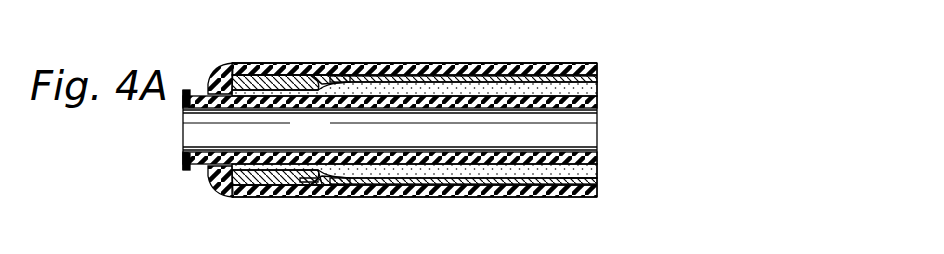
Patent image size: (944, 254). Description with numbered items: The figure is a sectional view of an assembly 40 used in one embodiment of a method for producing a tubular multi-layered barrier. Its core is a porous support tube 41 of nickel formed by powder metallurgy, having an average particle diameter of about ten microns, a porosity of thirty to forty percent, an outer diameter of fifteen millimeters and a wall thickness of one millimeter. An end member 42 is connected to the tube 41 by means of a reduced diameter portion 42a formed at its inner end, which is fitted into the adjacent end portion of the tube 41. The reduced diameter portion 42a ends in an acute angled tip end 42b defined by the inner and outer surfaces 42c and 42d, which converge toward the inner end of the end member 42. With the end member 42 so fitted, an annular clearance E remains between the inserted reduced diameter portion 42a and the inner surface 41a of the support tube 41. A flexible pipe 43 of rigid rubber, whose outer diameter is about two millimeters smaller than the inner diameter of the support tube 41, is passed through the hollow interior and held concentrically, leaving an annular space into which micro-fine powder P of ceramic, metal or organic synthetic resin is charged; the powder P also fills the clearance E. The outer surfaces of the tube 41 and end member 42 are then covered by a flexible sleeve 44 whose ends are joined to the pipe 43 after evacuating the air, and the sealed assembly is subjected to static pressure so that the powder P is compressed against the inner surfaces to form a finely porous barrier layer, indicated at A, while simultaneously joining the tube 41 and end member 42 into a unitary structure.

The cable assembly end 40 is at (603, 97).
The porous support tube 41 is at (528, 66).
The inner surface of the support tube 41a is at (581, 84).
The end member 42 is at (215, 67).
The reduced diameter portion 42a is at (294, 80).
The acute angled tip end 42b is at (340, 78).
The inner surface of the end member 42c is at (318, 178).
The outer surface of the end member 42d is at (327, 178).
The flexible pipe 43 is at (477, 83).
The flexible sleeve 44 is at (403, 63).
The micro-fine powder P is at (486, 170).
The adhesive layer A is at (572, 170).
The annular clearance E is at (333, 182).